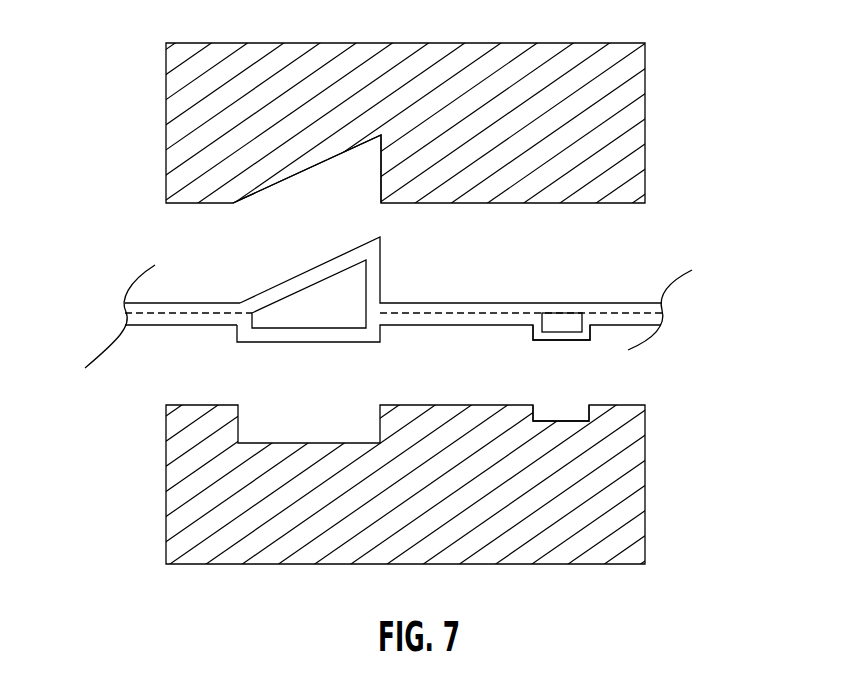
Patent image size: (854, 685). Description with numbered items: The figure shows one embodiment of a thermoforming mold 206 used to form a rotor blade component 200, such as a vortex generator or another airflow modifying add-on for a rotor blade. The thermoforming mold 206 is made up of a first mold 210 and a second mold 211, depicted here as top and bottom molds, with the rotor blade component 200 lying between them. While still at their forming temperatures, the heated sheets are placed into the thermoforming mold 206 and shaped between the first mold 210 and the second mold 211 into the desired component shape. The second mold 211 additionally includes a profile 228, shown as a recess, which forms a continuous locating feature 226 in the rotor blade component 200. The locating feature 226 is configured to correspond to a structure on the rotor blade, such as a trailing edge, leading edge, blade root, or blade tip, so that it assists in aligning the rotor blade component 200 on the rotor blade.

The thermoforming mold 206 is at (647, 100).
The first mold 210 is at (167, 145).
The rotor blade component 200 is at (107, 320).
The locating feature 226 is at (561, 346).
The profile 228 is at (562, 415).
The second mold 211 is at (167, 523).